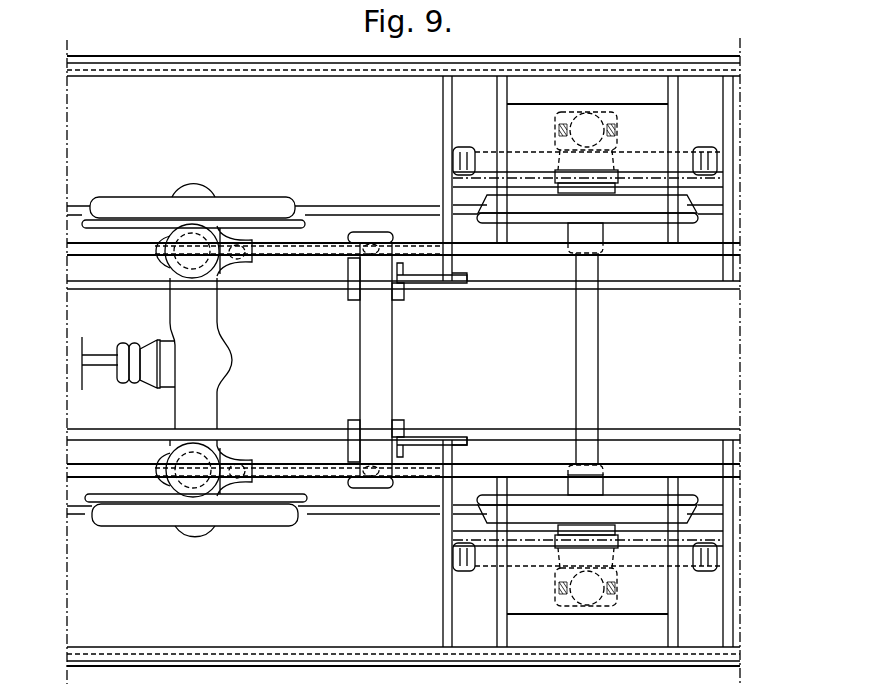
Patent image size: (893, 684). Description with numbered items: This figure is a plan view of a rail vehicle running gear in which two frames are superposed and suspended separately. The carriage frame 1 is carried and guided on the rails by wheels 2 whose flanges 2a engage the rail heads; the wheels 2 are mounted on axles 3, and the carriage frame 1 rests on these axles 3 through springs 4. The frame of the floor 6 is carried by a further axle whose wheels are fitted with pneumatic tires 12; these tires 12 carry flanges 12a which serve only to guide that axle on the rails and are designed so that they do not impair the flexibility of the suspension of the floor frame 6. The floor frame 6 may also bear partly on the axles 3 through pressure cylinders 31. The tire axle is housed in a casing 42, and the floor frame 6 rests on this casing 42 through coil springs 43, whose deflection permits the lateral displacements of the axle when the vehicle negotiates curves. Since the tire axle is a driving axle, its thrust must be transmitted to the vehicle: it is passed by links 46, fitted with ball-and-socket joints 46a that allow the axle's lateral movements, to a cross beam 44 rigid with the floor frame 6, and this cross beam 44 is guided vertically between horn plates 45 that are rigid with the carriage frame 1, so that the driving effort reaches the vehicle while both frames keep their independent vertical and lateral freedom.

The carriage frame 1 is at (519, 286).
The frame of the floor 6 is at (482, 467).
The wheels 2 is at (535, 516).
The flanges 2a is at (640, 500).
The axles 3 is at (617, 588).
The pressure cylinders 31 is at (556, 138).
The springs 4 is at (483, 158).
The pneumatic tires 12 is at (260, 203).
The flanges 12a is at (125, 225).
The casing 42 is at (213, 314).
The coil springs 43 is at (167, 471).
The cross beam 44 is at (392, 372).
The horn plates 45 is at (428, 284).
The links 46 is at (317, 477).
The ball-and-socket joints 46a is at (240, 463).